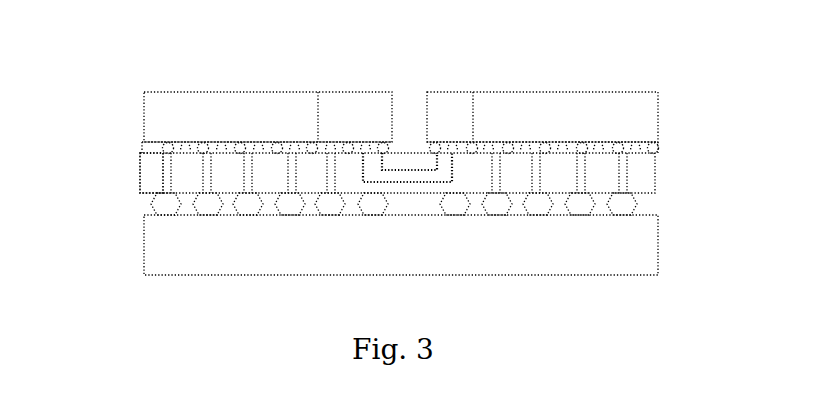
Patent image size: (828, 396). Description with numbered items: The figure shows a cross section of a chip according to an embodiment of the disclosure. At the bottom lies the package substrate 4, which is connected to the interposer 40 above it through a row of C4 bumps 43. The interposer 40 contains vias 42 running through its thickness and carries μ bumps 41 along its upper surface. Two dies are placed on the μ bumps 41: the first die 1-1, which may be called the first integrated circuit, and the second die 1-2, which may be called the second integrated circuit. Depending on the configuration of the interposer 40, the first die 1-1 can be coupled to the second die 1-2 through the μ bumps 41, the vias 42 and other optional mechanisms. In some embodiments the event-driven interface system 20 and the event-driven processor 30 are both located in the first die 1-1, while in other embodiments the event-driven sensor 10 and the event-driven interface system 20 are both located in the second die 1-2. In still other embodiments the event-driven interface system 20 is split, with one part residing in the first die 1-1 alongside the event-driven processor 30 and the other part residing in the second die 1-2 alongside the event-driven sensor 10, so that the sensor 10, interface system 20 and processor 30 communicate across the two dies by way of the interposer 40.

The first die 1-1 is at (564, 90).
The second die 1-2 is at (237, 84).
The event-driven sensor 10 is at (144, 92).
The event-driven interface system 20 is at (458, 118).
The event-driven processor 30 is at (562, 105).
The interposer 40 is at (637, 181).
The μ bumps 41 is at (142, 149).
The vias 42 is at (140, 170).
The C4 bumps 43 is at (150, 207).
The package substrate 4 is at (630, 242).